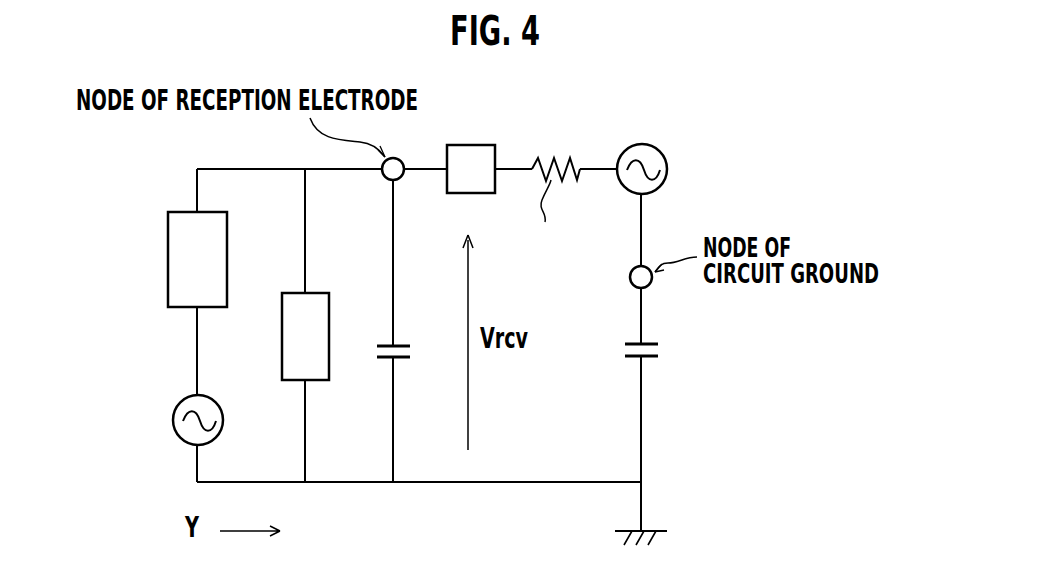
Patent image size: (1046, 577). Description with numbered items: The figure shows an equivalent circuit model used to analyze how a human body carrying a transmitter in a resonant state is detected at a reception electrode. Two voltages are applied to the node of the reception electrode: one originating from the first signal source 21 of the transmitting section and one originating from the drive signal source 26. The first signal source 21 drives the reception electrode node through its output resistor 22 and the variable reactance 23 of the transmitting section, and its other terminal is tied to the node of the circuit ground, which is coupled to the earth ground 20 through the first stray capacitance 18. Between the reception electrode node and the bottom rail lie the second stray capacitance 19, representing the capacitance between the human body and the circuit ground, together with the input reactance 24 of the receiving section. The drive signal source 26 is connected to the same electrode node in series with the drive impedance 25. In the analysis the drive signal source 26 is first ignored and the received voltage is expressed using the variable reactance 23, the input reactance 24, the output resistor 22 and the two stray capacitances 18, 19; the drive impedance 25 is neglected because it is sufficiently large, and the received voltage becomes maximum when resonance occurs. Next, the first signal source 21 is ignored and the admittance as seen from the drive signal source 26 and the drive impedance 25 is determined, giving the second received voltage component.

The stray capacitance Cg 18 is at (648, 344).
The stray capacitance Cb 19 is at (402, 346).
The earth ground 20 is at (656, 531).
The signal source Vs 21 is at (645, 145).
The output resistor Rs 22 is at (556, 158).
The variable reactance Xv 23 is at (470, 145).
The input reactance Xin 24 is at (322, 293).
The impedance Zdrv 25 is at (227, 253).
The signal source Vdrv 26 is at (208, 397).